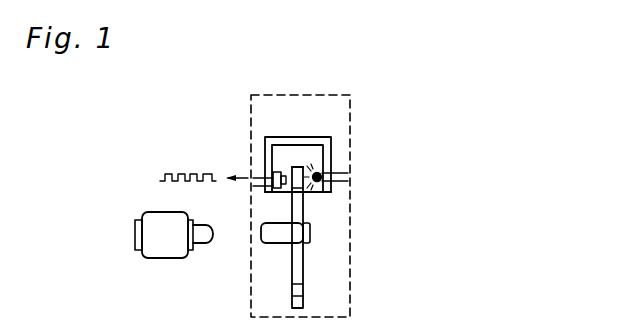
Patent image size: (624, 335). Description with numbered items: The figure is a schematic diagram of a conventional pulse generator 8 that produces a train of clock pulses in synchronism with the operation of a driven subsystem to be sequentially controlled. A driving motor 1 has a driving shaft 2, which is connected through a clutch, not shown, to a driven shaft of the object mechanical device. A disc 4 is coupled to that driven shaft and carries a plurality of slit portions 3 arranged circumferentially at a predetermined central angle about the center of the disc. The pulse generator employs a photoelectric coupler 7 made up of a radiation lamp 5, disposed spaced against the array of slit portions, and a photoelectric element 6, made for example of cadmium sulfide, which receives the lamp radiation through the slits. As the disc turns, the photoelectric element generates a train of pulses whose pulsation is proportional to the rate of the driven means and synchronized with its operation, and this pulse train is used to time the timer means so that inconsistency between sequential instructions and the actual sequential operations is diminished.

The driving motor 1 is at (152, 222).
The driving shaft 2 is at (275, 237).
The slit portions 3 is at (303, 295).
The disc 4 is at (297, 205).
The radiation lamp 5 is at (322, 169).
The photoelectric element 6 is at (262, 170).
The photoelectric coupler 7 is at (304, 167).
The pulse generator 8 is at (455, 118).